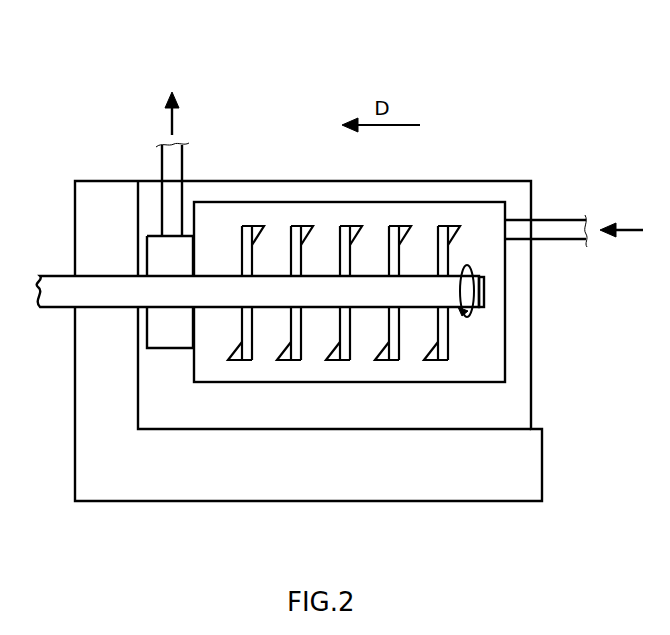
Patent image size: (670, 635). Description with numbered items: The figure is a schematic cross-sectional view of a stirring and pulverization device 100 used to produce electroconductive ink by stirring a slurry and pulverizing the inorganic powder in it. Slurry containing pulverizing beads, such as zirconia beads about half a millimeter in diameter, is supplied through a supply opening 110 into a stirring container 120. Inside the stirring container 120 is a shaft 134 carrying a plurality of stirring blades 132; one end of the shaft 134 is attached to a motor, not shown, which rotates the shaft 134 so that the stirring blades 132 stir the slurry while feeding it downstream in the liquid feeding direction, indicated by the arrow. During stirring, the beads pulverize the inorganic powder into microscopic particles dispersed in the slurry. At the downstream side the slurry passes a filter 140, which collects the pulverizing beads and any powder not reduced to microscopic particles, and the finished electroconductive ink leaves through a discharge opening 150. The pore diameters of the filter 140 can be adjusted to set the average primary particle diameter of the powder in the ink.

The stirring and pulverization device 100 is at (550, 107).
The supply opening 110 is at (553, 228).
The stirring container 120 is at (450, 192).
The stirring blades 132 is at (295, 228).
The shaft 134 is at (215, 283).
The filter 140 is at (193, 348).
The discharge opening 150 is at (168, 168).